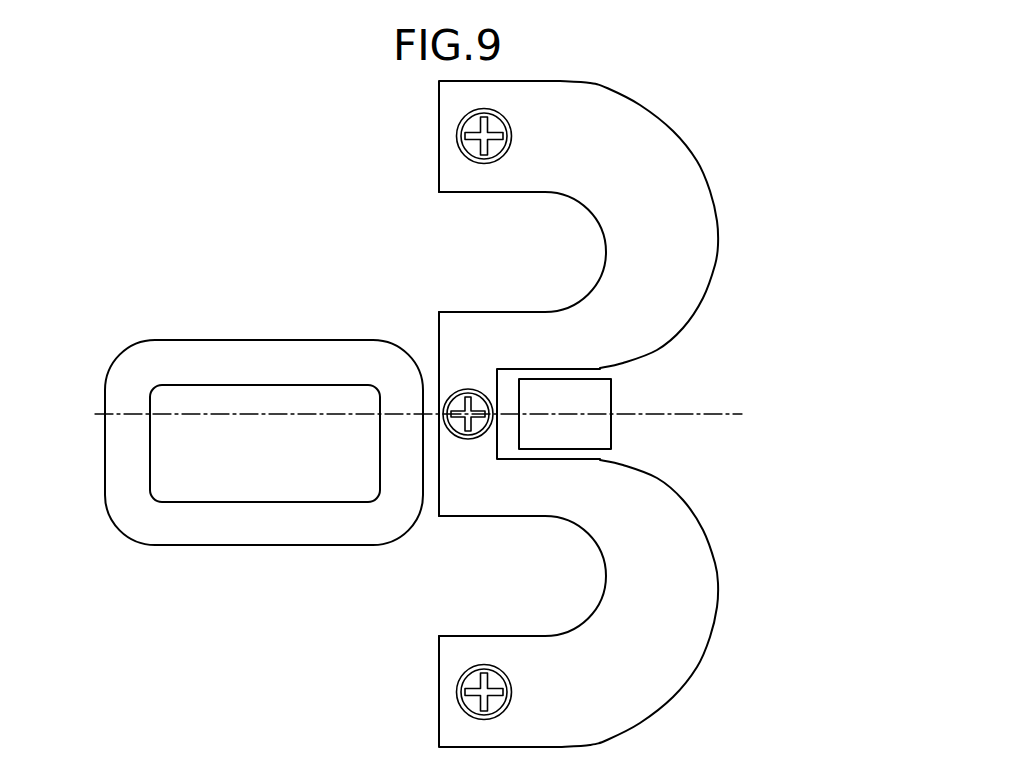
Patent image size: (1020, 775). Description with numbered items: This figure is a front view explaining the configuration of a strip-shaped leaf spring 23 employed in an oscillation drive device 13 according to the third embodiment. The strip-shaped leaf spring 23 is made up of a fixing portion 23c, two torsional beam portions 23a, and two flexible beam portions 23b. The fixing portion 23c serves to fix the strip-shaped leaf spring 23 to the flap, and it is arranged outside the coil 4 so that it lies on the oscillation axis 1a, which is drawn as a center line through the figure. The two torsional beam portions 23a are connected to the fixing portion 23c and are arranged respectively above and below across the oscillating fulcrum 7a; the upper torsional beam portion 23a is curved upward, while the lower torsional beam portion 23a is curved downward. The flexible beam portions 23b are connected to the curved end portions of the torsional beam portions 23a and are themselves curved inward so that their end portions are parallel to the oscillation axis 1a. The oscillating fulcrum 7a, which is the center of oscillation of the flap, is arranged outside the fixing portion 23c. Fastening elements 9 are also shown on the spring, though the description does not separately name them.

The oscillation axis 1a is at (688, 416).
The coil 4 is at (342, 358).
The oscillating fulcrum 7a is at (592, 403).
The screw 9 is at (465, 135).
The oscillation drive device 13 is at (243, 238).
The strip-shaped leaf spring 23 is at (700, 242).
The torsional beam portion 23a is at (552, 342).
The flexible beam portion 23b is at (590, 135).
The fixing portion 23c is at (472, 458).